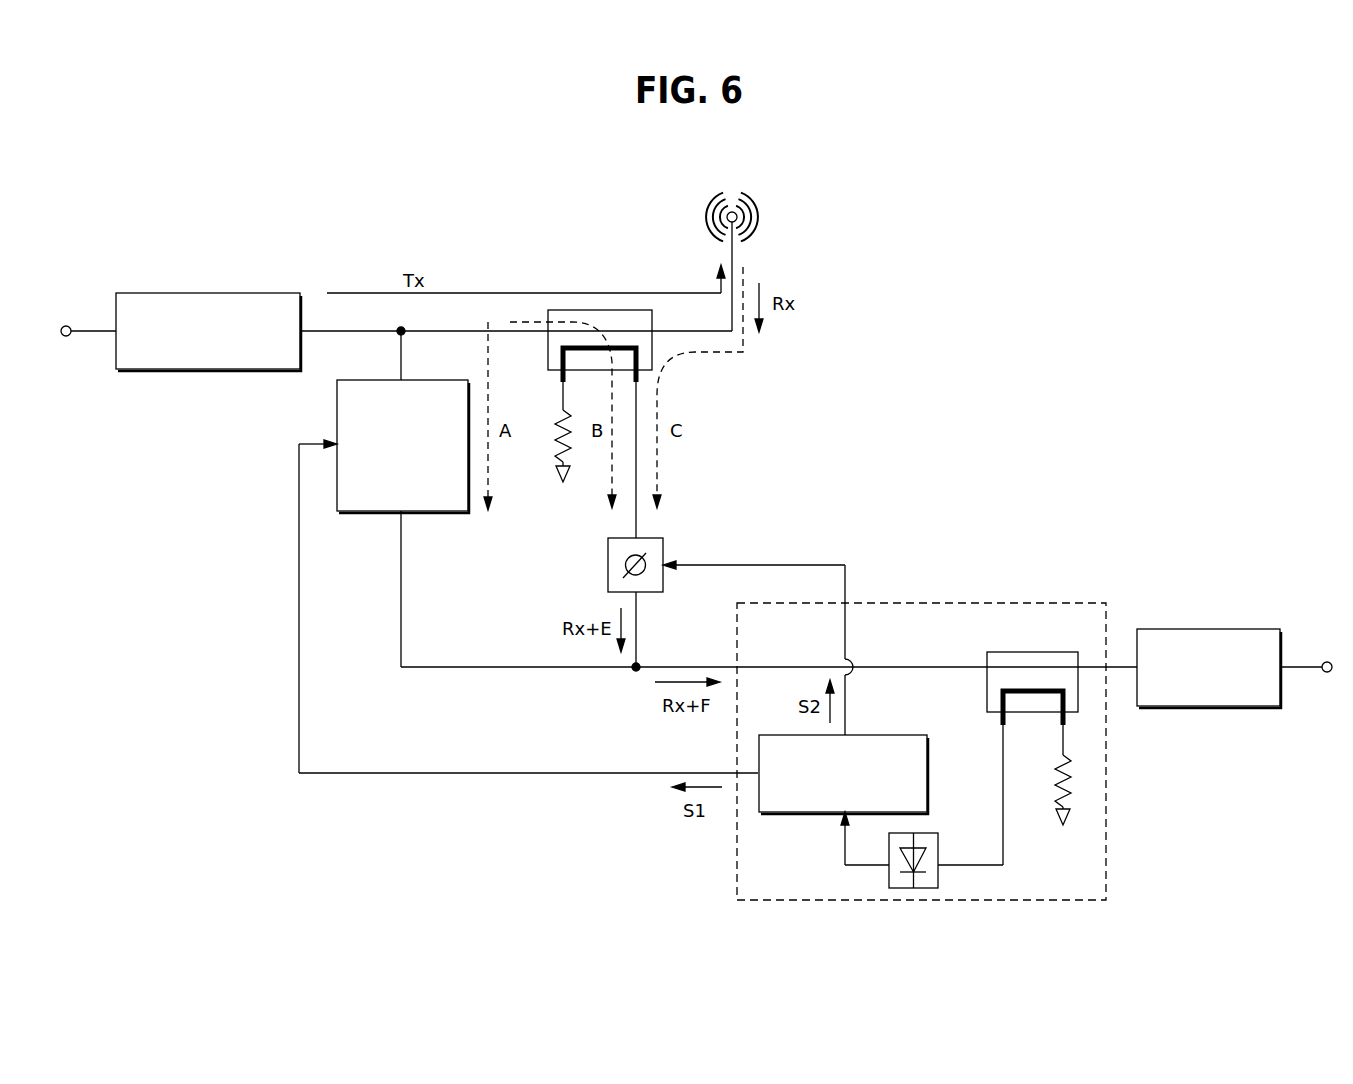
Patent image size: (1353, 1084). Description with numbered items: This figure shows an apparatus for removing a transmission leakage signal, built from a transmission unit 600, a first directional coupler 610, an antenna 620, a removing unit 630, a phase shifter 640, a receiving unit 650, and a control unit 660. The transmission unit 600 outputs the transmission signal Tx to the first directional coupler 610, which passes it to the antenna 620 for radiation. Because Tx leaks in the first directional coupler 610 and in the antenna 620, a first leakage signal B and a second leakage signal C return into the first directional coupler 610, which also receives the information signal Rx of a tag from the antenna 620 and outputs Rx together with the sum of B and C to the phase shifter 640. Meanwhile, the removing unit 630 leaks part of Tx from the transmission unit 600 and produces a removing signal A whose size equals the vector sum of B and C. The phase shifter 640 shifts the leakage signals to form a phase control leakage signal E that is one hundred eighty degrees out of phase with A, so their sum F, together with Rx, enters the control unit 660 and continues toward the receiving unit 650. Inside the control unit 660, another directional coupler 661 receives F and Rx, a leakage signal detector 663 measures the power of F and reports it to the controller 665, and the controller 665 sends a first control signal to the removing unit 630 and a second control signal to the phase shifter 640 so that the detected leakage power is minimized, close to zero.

The transmission unit 600 is at (210, 293).
The first directional coupler 610 is at (613, 310).
The antenna 620 is at (753, 195).
The removing unit 630 is at (417, 380).
The phase shifter 640 is at (608, 565).
The receiving unit 650 is at (1210, 629).
The control unit 660 is at (1037, 603).
The other directional coupler 661 is at (1033, 652).
The leakage signal detector 663 is at (927, 833).
The controller 665 is at (873, 735).